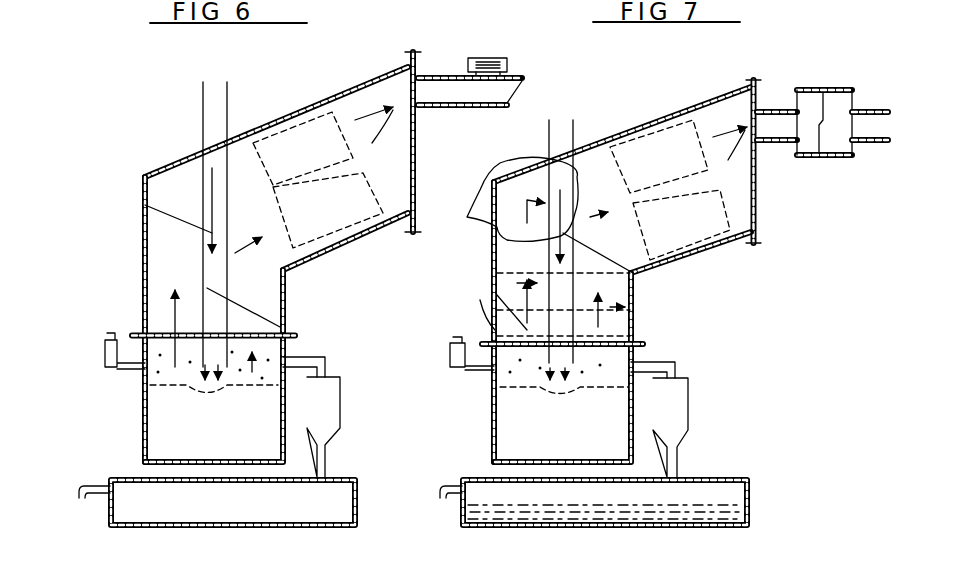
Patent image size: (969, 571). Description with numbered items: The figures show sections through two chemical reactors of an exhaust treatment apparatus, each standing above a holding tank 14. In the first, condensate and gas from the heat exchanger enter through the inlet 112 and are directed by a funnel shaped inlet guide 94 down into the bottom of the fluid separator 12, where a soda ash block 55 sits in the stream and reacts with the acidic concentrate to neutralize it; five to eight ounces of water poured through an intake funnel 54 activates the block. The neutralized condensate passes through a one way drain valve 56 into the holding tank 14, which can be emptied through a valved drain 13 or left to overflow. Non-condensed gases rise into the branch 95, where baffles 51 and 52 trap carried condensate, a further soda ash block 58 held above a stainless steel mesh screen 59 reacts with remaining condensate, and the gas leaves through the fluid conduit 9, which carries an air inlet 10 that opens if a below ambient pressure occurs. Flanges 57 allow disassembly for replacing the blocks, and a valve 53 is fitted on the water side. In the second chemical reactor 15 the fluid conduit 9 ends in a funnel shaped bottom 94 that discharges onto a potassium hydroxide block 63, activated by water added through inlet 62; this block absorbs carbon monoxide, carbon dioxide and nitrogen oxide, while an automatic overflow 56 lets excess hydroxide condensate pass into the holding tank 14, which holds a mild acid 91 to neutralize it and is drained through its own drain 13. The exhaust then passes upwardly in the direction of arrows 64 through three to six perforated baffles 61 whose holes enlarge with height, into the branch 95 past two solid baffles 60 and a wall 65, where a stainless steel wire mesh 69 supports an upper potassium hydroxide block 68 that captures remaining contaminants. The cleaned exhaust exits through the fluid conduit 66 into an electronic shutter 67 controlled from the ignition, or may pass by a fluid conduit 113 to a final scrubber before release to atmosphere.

In FIG. 6, the fluid conduit 9 is at (436, 108).
In FIG. 7, the fluid conduit 9 is at (583, 128).
In FIG. 6, the air inlet 10 is at (513, 55).
In FIG. 6, the fluid separator 12 is at (145, 250).
In FIG. 6, the drain 13 is at (85, 505).
In FIG. 7, the drain 13 is at (447, 505).
In FIG. 6, the holding tank 14 is at (357, 507).
In FIG. 7, the holding tank 14 is at (752, 490).
In FIG. 7, the second chemical reactor 15 is at (494, 252).
In FIG. 6, the baffle 51 is at (145, 208).
In FIG. 6, the baffle 52 is at (207, 289).
In FIG. 6, the inlet valve 53 is at (102, 352).
In FIG. 6, the intake funnel 54 is at (173, 350).
In FIG. 6, the soda ash block 55 is at (170, 427).
In FIG. 6, the one way drain valve 56 is at (345, 418).
In FIG. 7, the one way drain valve 56 is at (693, 410).
In FIG. 6, the flanges 57 is at (410, 232).
In FIG. 6, the soda ash block 58 is at (303, 138).
In FIG. 6, the stainless steel mesh screen 59 is at (230, 150).
In FIG. 7, the solid baffles 60 is at (504, 199).
In FIG. 7, the baffles 61 is at (500, 333).
In FIG. 7, the water inlet 62 is at (448, 357).
In FIG. 7, the potassium hydroxide block 63 is at (513, 418).
In FIG. 7, the arrows 64 is at (645, 318).
In FIG. 7, the inclined wall 65 is at (645, 300).
In FIG. 7, the fluid conduit 66 is at (782, 143).
In FIG. 7, the electronic shutter 67 is at (838, 158).
In FIG. 7, the potassium hydroxide block 68 is at (670, 130).
In FIG. 7, the stainless steel wire mesh 69 is at (607, 142).
In FIG. 7, the mild acid 91 is at (752, 522).
In FIG. 6, the funnel shaped inlet guide 94 is at (237, 368).
In FIG. 7, the funnel shaped inlet guide 94 is at (545, 360).
In FIG. 6, the branch 95 is at (357, 88).
In FIG. 7, the branch 95 is at (708, 252).
In FIG. 6, the inlet 112 is at (203, 124).
In FIG. 7, the fluid conduit 113 is at (863, 97).